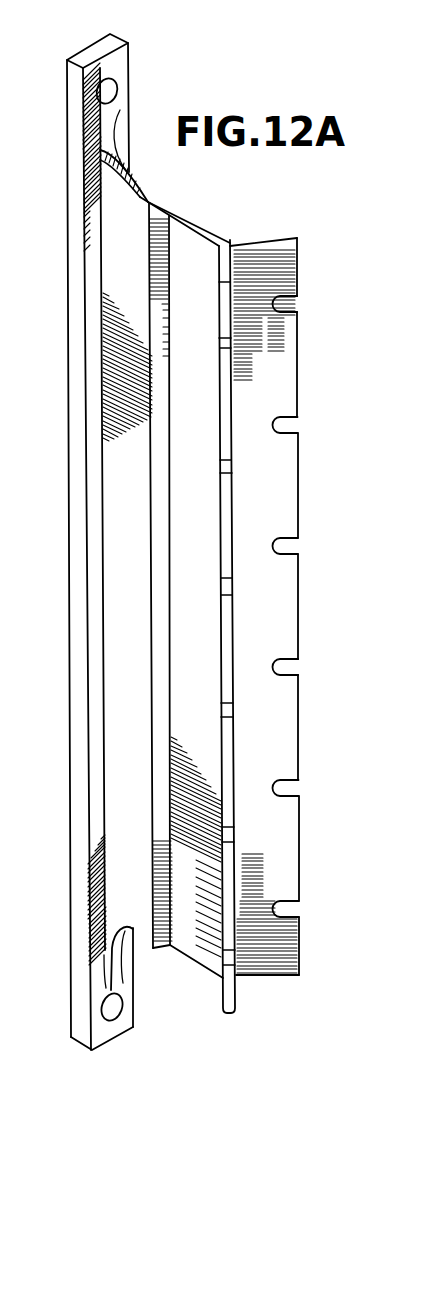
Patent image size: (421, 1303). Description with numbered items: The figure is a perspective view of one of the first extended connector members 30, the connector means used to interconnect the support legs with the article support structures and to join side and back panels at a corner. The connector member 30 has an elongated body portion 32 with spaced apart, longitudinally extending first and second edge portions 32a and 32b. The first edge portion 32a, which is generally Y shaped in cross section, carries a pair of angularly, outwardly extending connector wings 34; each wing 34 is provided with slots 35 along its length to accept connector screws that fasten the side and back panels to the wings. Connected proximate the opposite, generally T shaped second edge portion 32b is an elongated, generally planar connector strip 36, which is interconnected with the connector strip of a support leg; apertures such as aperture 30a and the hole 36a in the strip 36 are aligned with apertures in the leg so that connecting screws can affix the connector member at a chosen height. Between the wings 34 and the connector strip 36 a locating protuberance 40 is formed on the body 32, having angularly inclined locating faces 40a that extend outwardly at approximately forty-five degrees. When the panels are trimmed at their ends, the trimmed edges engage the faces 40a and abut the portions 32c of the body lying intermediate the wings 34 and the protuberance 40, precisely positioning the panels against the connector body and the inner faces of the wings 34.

The first extended connector member 30 is at (141, 66).
The aperture 30a is at (112, 1012).
The elongated body portion 32 is at (198, 228).
The first edge portion 32a is at (229, 240).
The second edge portion 32b is at (110, 187).
The portion of the connector member 32c is at (172, 415).
The connector wing 34 is at (228, 380).
The slot 35 is at (232, 467).
The connector strip 36 is at (79, 52).
The upper mounting hole 36a is at (108, 88).
The locating protuberance 40 is at (166, 203).
The locating face 40a is at (158, 617).